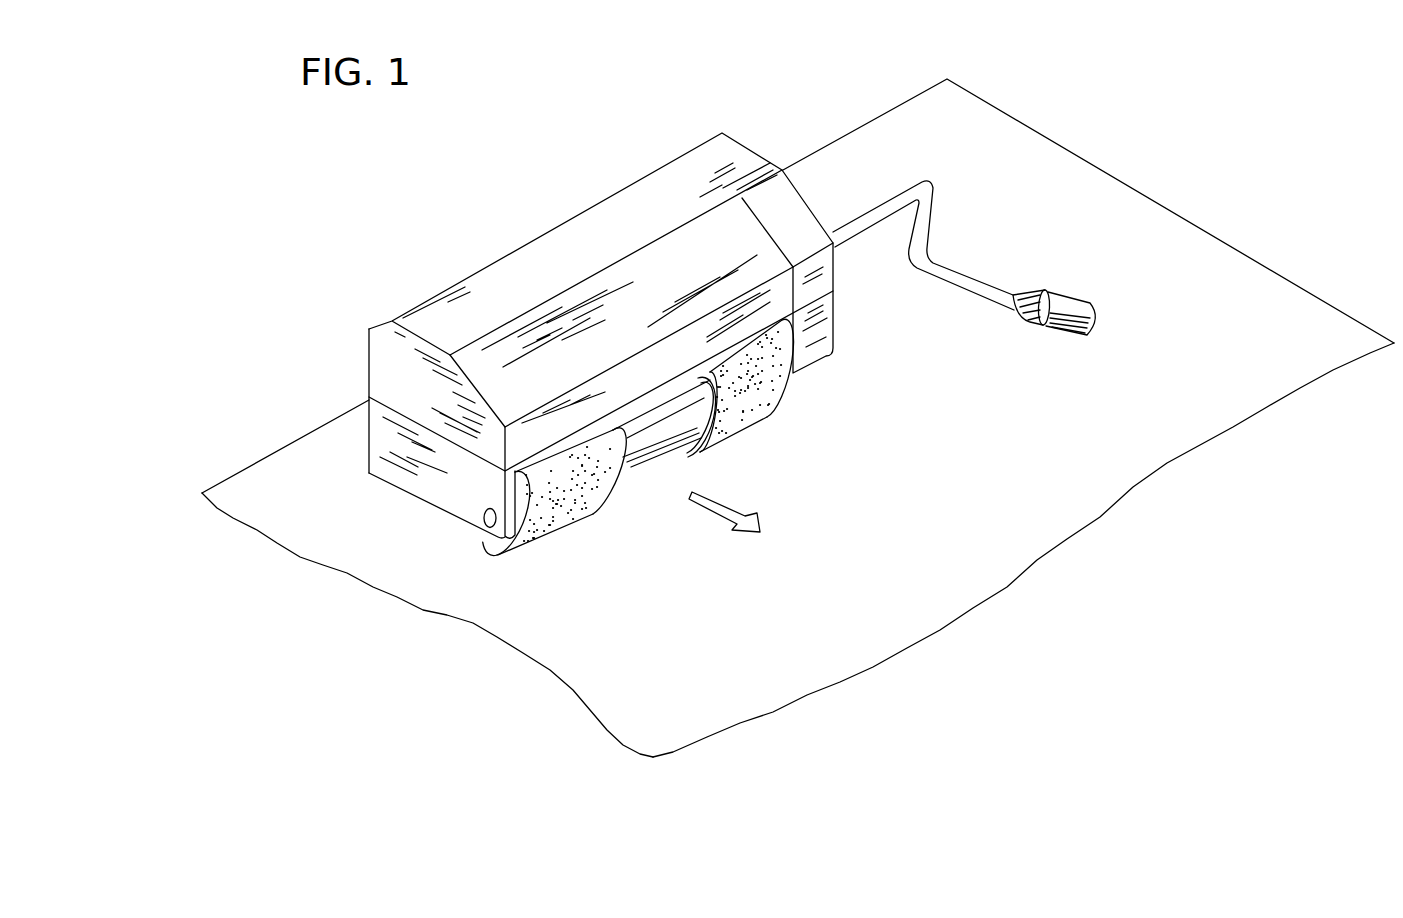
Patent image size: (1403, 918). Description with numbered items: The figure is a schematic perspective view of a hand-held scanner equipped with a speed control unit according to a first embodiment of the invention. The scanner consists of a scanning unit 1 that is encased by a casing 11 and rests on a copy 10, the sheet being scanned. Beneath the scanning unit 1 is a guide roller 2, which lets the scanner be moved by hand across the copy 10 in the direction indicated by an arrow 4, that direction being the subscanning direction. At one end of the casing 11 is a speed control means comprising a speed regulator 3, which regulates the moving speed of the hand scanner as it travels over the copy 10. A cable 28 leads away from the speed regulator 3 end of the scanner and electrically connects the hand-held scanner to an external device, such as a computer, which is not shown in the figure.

The scanning unit 1 is at (341, 290).
The guide roller 2 is at (765, 414).
The speed regulator 3 is at (835, 302).
The arrow 4 is at (733, 503).
The copy 10 is at (1058, 140).
The casing 11 is at (535, 238).
The cable 28 is at (967, 278).